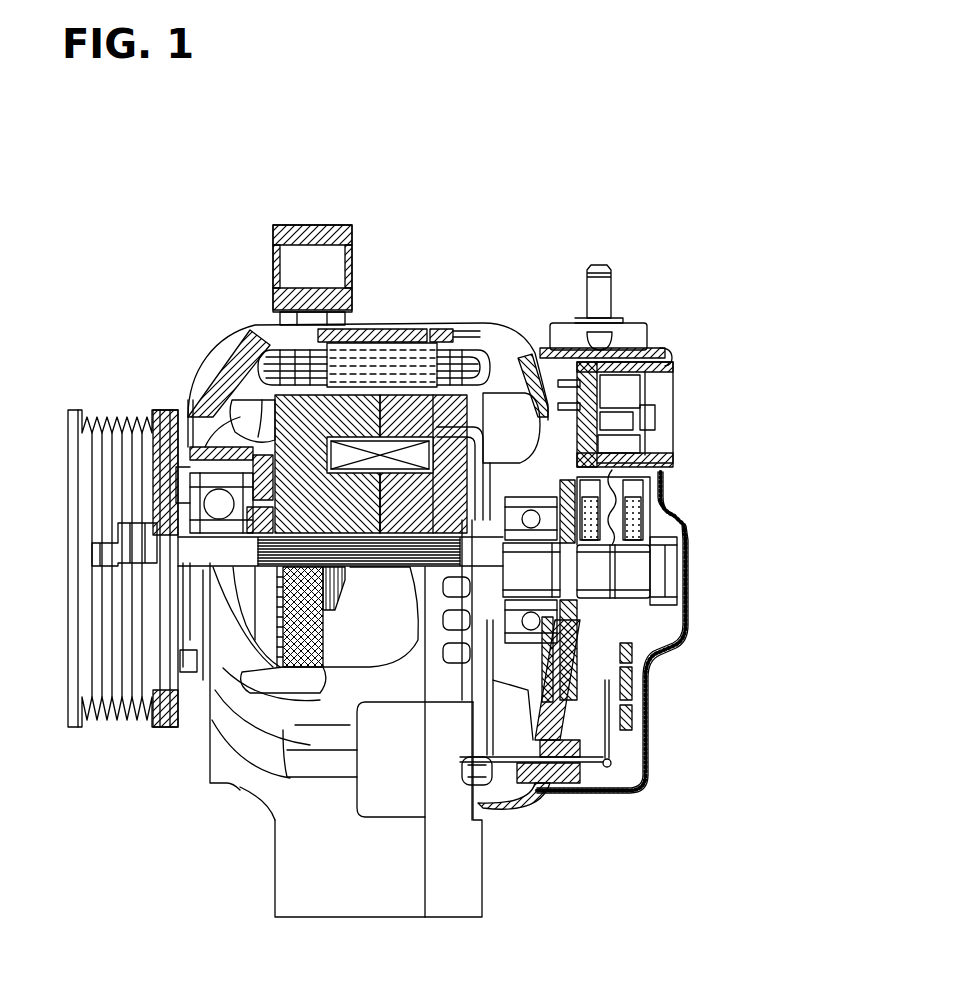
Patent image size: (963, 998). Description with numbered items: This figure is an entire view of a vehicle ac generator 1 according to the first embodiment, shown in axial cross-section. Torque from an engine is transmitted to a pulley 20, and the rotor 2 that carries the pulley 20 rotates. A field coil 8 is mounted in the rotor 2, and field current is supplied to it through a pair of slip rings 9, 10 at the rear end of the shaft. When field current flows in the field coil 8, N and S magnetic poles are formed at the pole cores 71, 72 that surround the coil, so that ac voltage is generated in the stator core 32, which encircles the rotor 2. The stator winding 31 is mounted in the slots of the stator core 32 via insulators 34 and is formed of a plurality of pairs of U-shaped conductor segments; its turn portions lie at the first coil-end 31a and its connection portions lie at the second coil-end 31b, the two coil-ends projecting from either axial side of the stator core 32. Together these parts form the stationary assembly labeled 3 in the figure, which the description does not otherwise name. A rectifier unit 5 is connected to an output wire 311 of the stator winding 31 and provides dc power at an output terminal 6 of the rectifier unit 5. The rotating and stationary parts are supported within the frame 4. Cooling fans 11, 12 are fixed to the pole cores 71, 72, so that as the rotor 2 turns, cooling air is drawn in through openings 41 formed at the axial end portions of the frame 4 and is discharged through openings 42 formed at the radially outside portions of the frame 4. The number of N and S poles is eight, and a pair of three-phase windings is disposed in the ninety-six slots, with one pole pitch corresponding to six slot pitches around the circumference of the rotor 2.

The vehicle ac generator 1 is at (554, 214).
The rotor 2 is at (248, 387).
The stator 3 is at (492, 347).
The frame 4 is at (383, 447).
The rectifier unit 5 is at (628, 683).
The output terminal 6 is at (605, 290).
The field coil 8 is at (405, 435).
The slip ring 9 is at (590, 580).
The slip ring 10 is at (640, 562).
The cooling fan 11 is at (207, 433).
The cooling fan 12 is at (617, 417).
The pulley 20 is at (78, 450).
The stator winding 31 is at (472, 347).
The first coil-end 31a is at (453, 353).
The second coil-end 31b is at (262, 365).
The stator core 32 is at (365, 350).
The insulator 34 is at (272, 323).
The opening 41 is at (195, 440).
The opening 42 is at (233, 343).
The pole core 71 is at (648, 445).
The pole core 72 is at (240, 427).
The output wire 311 is at (595, 765).